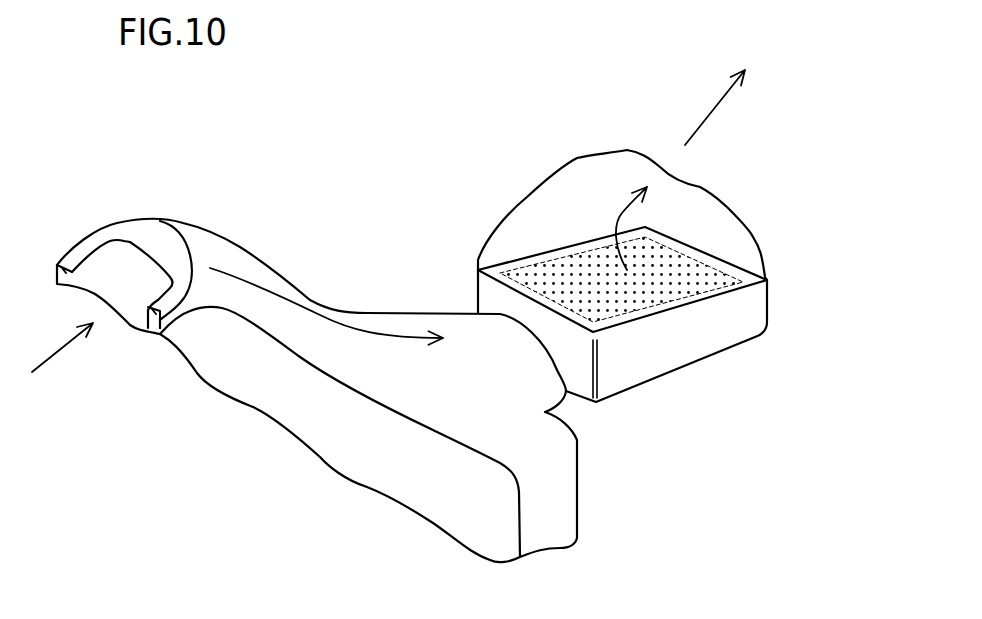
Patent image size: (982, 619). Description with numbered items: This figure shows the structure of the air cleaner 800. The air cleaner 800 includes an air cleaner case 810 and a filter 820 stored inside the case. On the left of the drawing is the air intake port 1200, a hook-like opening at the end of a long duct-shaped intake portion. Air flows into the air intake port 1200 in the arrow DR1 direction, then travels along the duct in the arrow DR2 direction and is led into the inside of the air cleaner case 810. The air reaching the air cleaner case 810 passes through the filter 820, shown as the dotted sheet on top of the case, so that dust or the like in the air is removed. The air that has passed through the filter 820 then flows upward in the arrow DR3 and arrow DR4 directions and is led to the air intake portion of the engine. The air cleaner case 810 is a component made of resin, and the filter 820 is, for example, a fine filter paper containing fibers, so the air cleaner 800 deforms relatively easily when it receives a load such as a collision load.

The air intake port 1200 is at (135, 275).
The air cleaner 800 is at (691, 283).
The air cleaner case 810 is at (687, 343).
The filter 820 is at (663, 282).
The arrow DR1 direction DR1 is at (53, 353).
The arrow DR2 direction DR2 is at (313, 312).
The arrow DR3 direction DR3 is at (622, 217).
The arrow DR4 direction DR4 is at (710, 110).